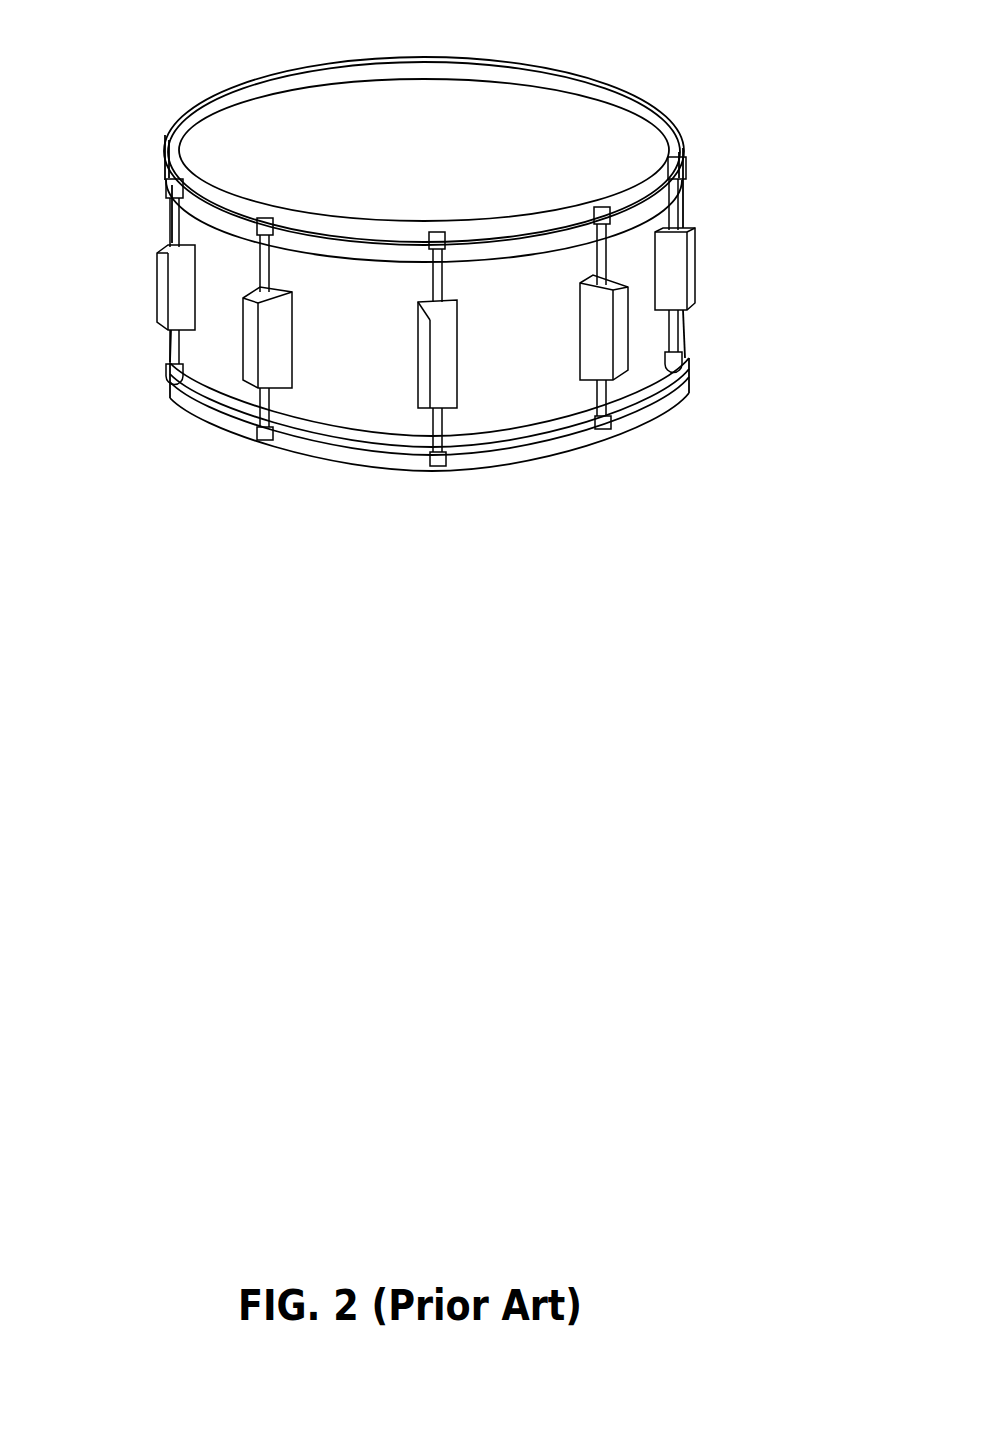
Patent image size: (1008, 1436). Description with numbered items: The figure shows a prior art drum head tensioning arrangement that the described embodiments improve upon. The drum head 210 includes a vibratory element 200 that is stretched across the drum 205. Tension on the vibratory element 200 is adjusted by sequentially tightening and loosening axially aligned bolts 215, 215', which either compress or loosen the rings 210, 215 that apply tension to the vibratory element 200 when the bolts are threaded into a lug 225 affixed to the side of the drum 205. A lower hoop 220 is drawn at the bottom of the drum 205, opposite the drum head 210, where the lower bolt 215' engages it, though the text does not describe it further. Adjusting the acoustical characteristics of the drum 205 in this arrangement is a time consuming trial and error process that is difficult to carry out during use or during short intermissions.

The vibratory element 200 is at (542, 155).
The drum 205 is at (500, 323).
The drum head 210 is at (477, 225).
The axially aligned bolt 215 is at (242, 239).
The axially aligned bolt 215' is at (432, 482).
The bottom hoop 220 is at (422, 452).
The lug 225 is at (442, 358).